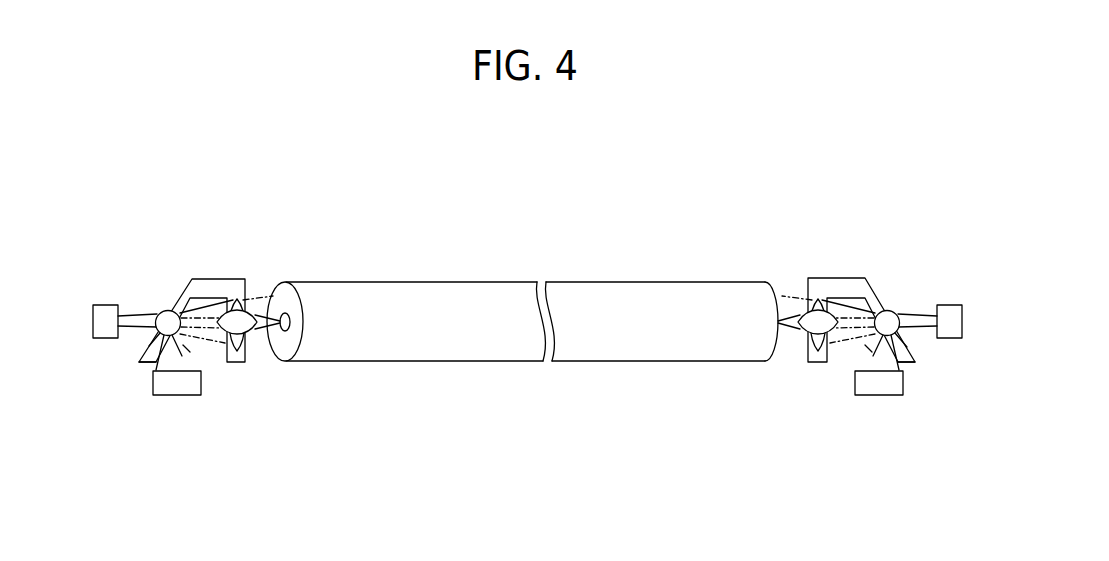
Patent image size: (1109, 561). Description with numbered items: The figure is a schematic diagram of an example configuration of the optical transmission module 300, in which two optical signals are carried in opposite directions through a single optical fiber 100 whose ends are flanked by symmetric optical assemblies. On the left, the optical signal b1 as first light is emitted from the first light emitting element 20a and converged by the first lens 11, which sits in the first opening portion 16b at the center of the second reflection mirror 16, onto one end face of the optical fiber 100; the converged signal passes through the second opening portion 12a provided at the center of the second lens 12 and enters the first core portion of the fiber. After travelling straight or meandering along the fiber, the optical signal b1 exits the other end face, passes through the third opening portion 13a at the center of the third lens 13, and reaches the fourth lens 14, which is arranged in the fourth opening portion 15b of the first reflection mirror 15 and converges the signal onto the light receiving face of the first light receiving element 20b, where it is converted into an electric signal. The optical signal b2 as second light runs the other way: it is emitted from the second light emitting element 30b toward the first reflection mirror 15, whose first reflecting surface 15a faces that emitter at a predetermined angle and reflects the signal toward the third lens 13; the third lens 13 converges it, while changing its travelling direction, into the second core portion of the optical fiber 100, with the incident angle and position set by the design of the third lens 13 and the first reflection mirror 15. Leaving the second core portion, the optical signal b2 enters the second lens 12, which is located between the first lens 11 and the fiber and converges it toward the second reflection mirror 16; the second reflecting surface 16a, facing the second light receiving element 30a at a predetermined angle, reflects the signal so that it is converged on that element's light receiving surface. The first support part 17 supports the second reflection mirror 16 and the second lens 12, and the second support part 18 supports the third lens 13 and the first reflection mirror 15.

The optical transmission module 300 is at (549, 181).
The optical fiber 100 is at (477, 293).
The first support part 17 is at (220, 278).
The second support part 18 is at (835, 275).
The first light emitting element 20a is at (102, 305).
The first light receiving element 20b is at (952, 305).
The second light receiving element 30a is at (177, 392).
The second light emitting element 30b is at (877, 390).
The optical signal b1 is at (140, 316).
The optical signal b2 is at (172, 337).
The first lens 11 is at (167, 309).
The fourth lens 14 is at (887, 309).
The second lens 12 is at (182, 338).
The second opening portion 12a is at (244, 314).
The third lens 13 is at (808, 351).
The third opening portion 13a is at (811, 314).
The second reflection mirror 16 is at (148, 346).
The second reflecting surface 16a is at (155, 363).
The first opening portion 16b is at (182, 340).
The first reflection mirror 15 is at (912, 348).
The first reflecting surface 15a is at (904, 364).
The fourth opening portion 15b is at (862, 340).